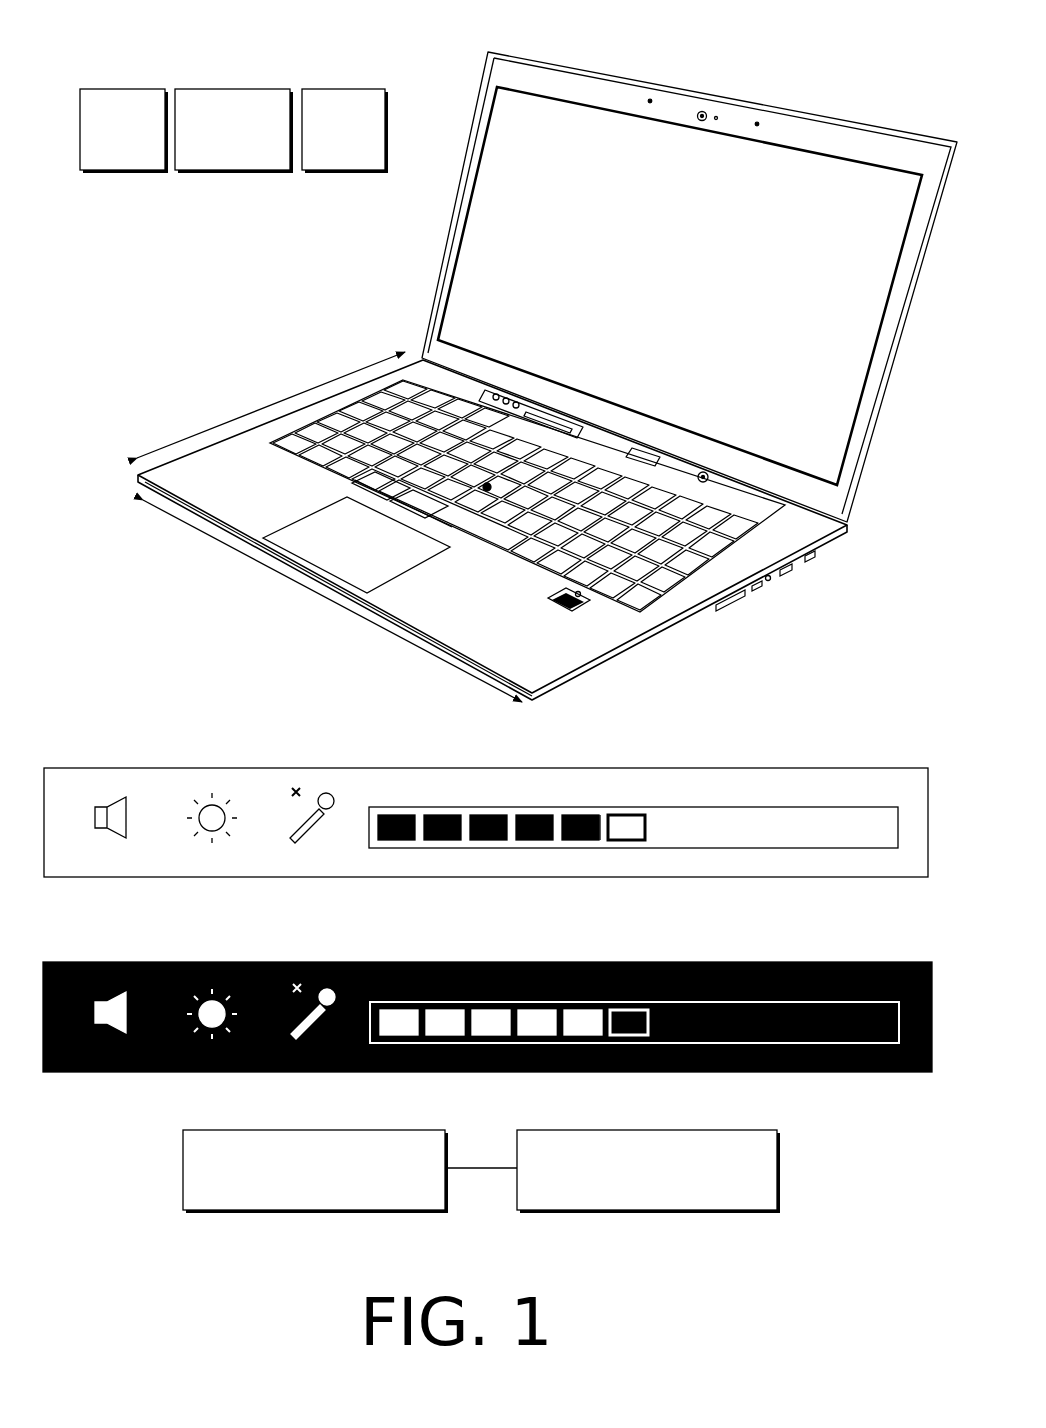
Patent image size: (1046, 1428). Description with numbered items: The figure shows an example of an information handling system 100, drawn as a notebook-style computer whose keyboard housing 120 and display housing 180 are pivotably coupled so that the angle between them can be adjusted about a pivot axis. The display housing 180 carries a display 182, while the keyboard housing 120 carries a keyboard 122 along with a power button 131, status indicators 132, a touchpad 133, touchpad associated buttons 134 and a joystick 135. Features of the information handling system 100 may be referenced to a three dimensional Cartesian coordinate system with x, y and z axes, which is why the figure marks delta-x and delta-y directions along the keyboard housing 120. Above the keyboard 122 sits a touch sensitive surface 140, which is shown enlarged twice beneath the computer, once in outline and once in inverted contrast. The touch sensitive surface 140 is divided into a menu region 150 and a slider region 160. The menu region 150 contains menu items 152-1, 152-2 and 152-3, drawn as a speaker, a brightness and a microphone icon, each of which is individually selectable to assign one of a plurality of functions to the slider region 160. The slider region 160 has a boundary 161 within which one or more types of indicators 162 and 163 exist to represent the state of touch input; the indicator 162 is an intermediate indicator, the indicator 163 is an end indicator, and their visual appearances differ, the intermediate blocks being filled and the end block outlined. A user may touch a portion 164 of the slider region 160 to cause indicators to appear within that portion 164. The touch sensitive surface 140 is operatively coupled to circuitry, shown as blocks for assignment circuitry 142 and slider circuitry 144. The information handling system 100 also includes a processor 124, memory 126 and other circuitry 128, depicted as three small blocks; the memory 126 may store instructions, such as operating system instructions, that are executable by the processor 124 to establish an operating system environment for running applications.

The information handling system 100 is at (434, 31).
The keyboard housing 120 is at (504, 612).
The keyboard 122 is at (655, 573).
The processor 124 is at (145, 155).
The memory 126 is at (253, 155).
The other circuitry 128 is at (364, 155).
The power button 131 is at (712, 477).
The status indicators 132 is at (668, 450).
The touchpad 133 is at (330, 540).
The touchpad associated buttons 134 is at (352, 492).
The joystick 135 is at (352, 478).
The touch sensitive surface 140 is at (490, 392).
The assignment circuitry 142 is at (335, 1197).
The slider circuitry 144 is at (668, 1197).
The menu region 150 is at (194, 904).
The menu item 152-1 is at (92, 782).
The menu item 152-2 is at (200, 792).
The menu item 152-3 is at (315, 790).
The slider region 160 is at (510, 894).
The boundary 161 is at (588, 812).
The indicator 162 is at (400, 812).
The indicator 163 is at (626, 842).
The portion of the slider region 164 is at (712, 813).
The display housing 180 is at (858, 118).
The display 182 is at (686, 258).